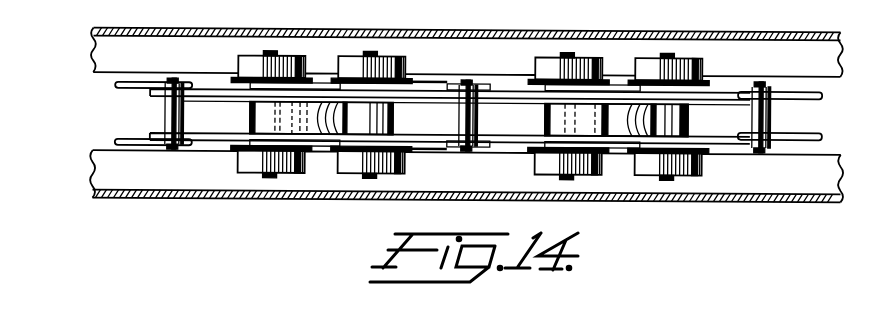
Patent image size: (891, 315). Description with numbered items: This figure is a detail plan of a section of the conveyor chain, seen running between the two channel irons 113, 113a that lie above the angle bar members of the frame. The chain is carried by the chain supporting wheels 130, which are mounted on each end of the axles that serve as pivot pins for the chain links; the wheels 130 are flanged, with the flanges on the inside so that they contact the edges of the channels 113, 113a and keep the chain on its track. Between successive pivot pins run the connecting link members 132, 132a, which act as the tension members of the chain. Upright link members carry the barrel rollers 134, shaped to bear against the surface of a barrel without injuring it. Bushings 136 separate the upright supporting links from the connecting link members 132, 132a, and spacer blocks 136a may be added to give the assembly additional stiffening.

The channel iron 113 is at (725, 28).
The channel iron 113a is at (650, 198).
The chain supporting wheel 130 is at (353, 62).
The connecting link member 132 is at (427, 89).
The connecting link member 132a is at (713, 153).
The barrel roller 134 is at (293, 117).
The bushing 136 is at (173, 111).
The spacer block 136a is at (696, 109).